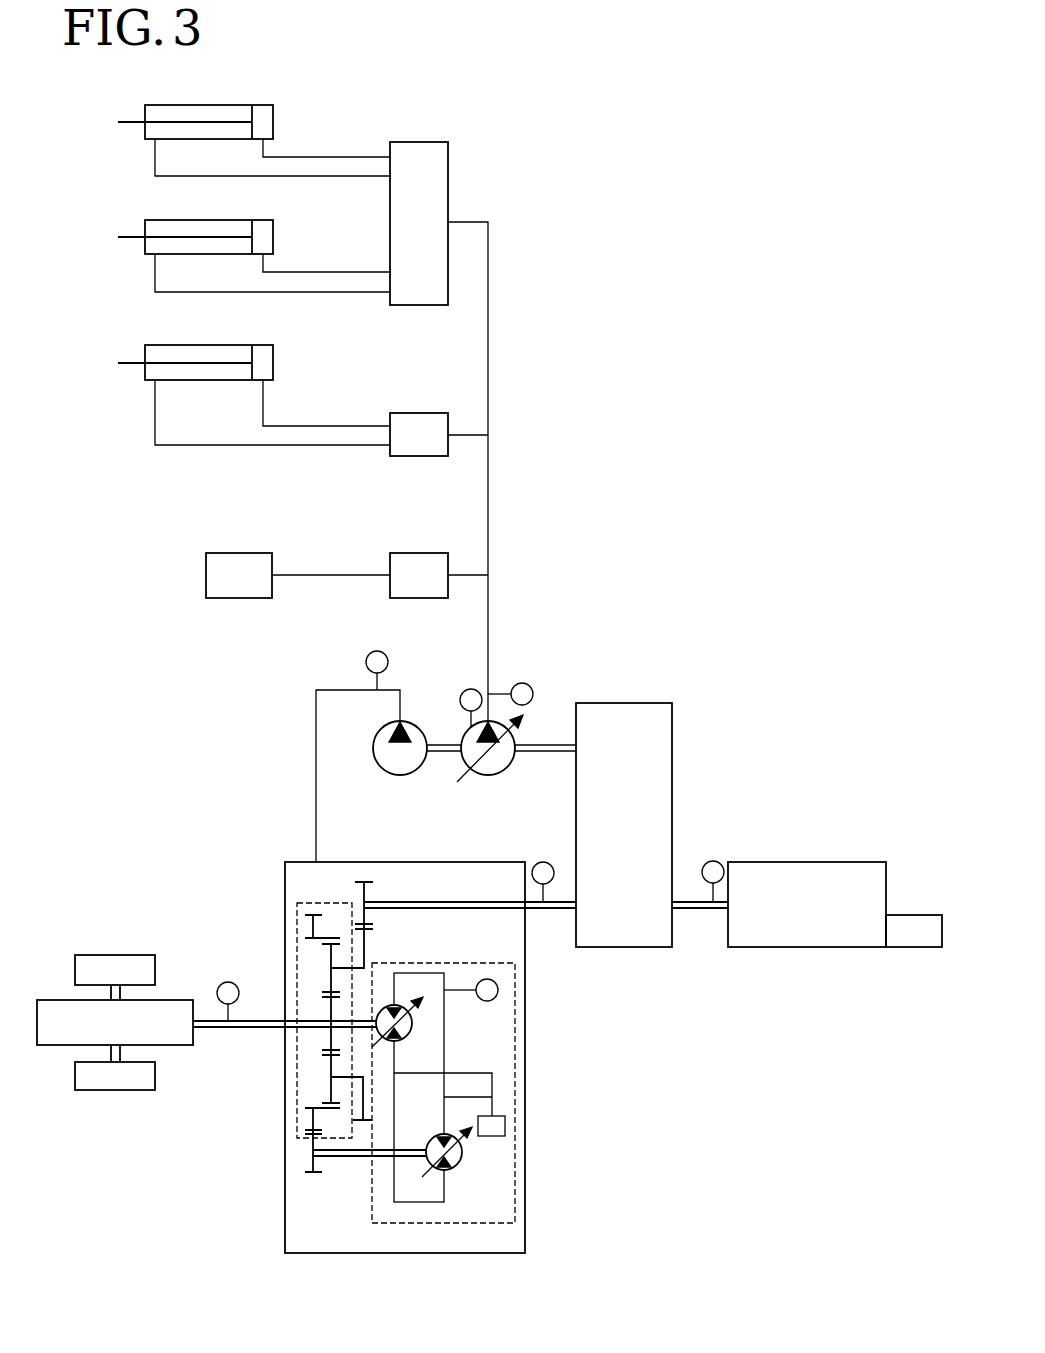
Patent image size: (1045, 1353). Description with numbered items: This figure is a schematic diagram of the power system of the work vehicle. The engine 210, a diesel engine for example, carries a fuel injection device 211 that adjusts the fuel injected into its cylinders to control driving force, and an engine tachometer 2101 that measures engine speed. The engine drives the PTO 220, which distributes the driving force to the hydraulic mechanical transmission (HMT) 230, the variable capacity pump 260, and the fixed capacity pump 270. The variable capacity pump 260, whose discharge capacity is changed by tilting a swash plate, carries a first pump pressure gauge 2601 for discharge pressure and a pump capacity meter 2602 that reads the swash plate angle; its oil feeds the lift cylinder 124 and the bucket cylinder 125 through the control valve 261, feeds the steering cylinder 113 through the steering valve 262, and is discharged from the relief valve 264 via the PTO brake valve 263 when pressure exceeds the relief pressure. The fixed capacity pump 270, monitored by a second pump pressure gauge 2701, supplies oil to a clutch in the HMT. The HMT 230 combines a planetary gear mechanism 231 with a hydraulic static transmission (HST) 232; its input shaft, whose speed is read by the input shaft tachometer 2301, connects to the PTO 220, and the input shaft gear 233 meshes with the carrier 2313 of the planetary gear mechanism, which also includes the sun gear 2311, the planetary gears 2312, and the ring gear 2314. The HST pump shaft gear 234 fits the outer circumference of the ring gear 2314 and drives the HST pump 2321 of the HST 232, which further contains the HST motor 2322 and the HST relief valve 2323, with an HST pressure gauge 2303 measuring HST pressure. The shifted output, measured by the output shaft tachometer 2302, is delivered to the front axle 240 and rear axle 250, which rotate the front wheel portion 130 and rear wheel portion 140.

The lift cylinder 124 is at (212, 103).
The bucket cylinder 125 is at (212, 218).
The steering cylinder 113 is at (212, 343).
The control valve 261 is at (418, 140).
The steering valve 262 is at (418, 412).
The PTO brake valve 263 is at (418, 553).
The relief valve 264 is at (238, 553).
The second pump pressure gauge 2701 is at (372, 650).
The pump capacity meter 2602 is at (462, 690).
The first pump pressure gauge 2601 is at (525, 683).
The fixed capacity pump 270 is at (395, 776).
The variable capacity pump 260 is at (487, 776).
The power take off (PTO) 220 is at (625, 703).
The input shaft tachometer 2301 is at (543, 860).
The engine tachometer 2101 is at (713, 860).
The engine 210 is at (812, 862).
The fuel injection device 211 is at (915, 915).
The hydraulic mechanical transmission (HMT) 230 is at (330, 1253).
The input shaft gear 233 is at (360, 893).
The carrier 2313 is at (367, 947).
The planetary gear mechanism 231 is at (282, 1045).
The ring gear 2314 is at (308, 929).
The sun gear 2311 is at (325, 1037).
The planetary gears 2312 is at (325, 1067).
The HST pump shaft gear 234 is at (308, 1162).
The hydraulic static transmission (HST) 232 is at (490, 1135).
The HST motor 2322 is at (413, 1023).
The HST pump 2321 is at (462, 1155).
The HST pressure gauge 2303 is at (499, 988).
The HST relief valve 2323 is at (506, 1126).
The output shaft tachometer 2302 is at (225, 982).
The front wheel portion 130 is at (145, 1029).
The rear wheel portion 140 is at (113, 953).
The front axle 240 is at (112, 1069).
The rear axle 250 is at (55, 1045).